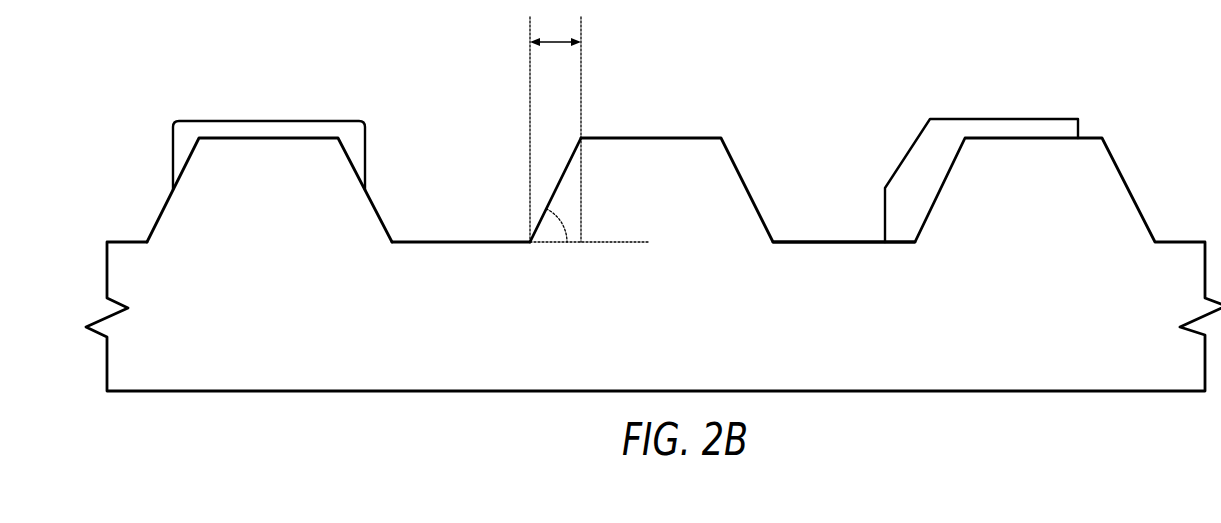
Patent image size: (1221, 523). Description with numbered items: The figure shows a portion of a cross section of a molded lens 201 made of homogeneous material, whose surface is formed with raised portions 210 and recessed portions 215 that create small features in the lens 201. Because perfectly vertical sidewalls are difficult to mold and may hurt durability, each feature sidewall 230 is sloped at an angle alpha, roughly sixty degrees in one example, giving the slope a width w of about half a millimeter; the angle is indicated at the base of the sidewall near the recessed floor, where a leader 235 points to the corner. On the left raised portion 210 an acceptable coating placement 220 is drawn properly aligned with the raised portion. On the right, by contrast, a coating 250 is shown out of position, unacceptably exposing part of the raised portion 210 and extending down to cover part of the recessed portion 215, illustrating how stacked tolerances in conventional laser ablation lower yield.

The lens 201 is at (684, 348).
The raised portion 210 is at (163, 225).
The recessed portion 215 is at (424, 108).
The coating placement 220 is at (208, 130).
The feature sidewall 230 is at (560, 178).
The bottom corner of trench 235 is at (561, 248).
The coating 250 is at (947, 130).